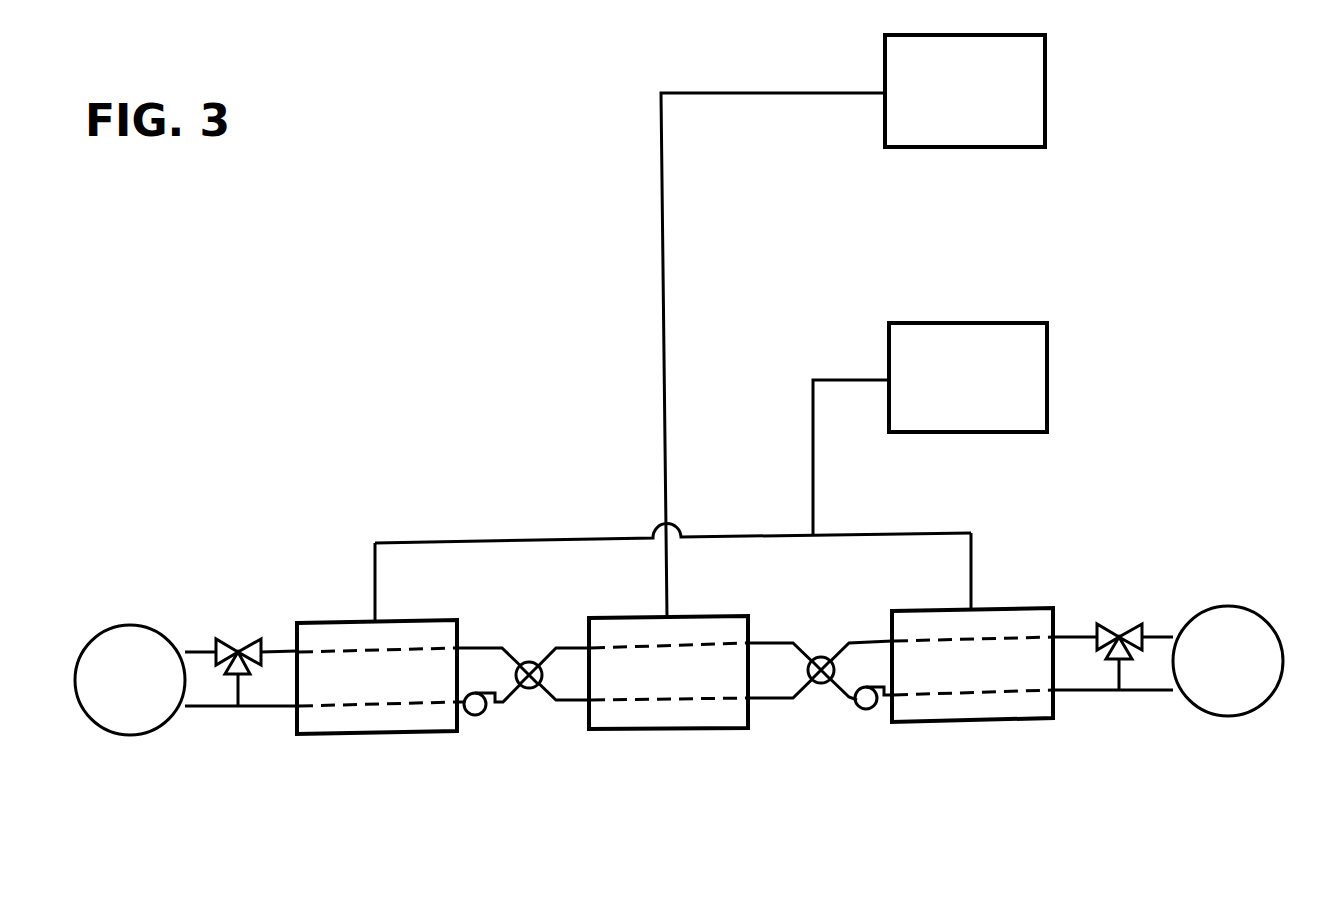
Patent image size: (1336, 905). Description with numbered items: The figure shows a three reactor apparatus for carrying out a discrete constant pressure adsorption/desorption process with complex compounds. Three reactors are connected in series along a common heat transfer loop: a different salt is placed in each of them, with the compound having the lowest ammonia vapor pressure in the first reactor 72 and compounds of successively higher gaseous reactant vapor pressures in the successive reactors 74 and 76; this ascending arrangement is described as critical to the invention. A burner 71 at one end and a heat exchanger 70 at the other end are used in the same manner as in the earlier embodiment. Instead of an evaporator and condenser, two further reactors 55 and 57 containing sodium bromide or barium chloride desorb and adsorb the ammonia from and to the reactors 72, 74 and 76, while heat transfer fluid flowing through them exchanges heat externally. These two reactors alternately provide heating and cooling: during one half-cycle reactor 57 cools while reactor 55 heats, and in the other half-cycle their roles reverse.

The reactor 55 is at (985, 148).
The reactor 57 is at (988, 433).
The heat exchanger 70 is at (1258, 709).
The burner 71 is at (135, 735).
The first reactor 72 is at (404, 734).
The reactor 74 is at (710, 729).
The reactor 76 is at (993, 722).